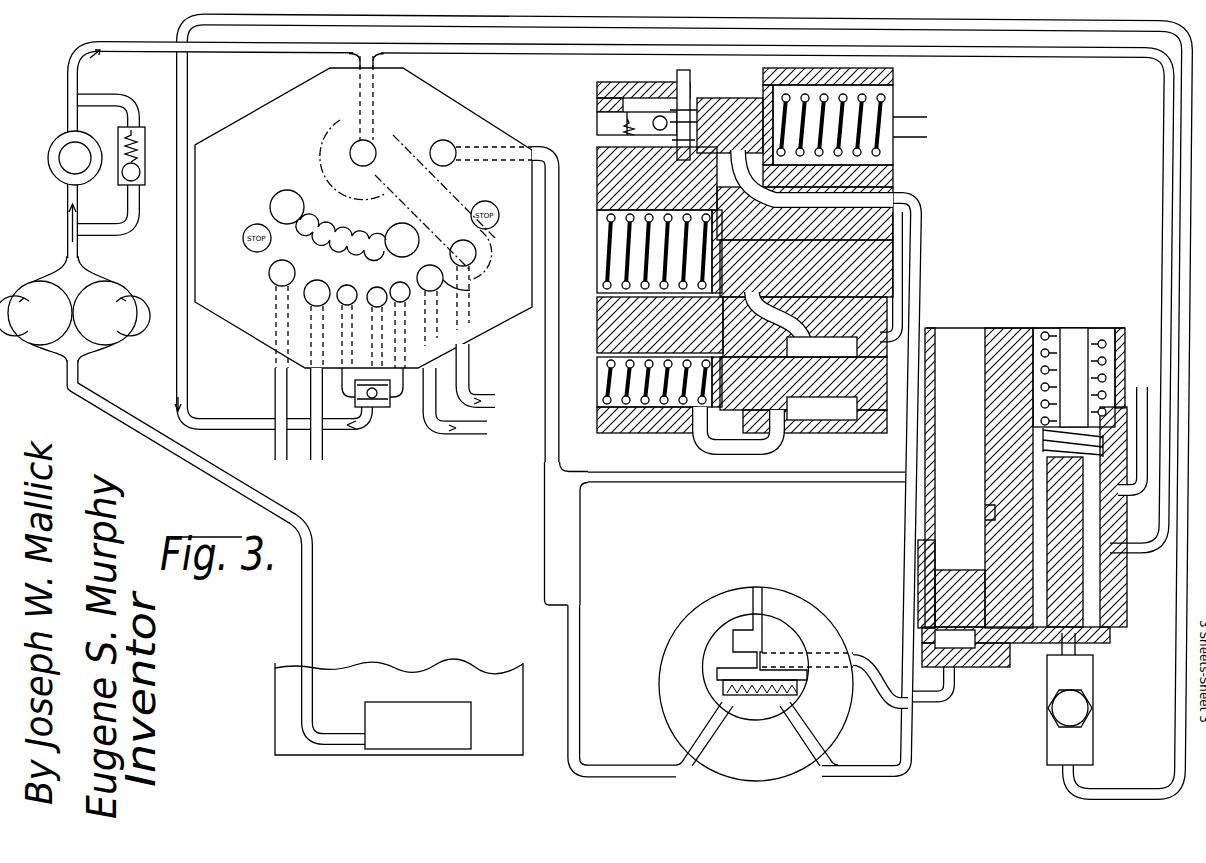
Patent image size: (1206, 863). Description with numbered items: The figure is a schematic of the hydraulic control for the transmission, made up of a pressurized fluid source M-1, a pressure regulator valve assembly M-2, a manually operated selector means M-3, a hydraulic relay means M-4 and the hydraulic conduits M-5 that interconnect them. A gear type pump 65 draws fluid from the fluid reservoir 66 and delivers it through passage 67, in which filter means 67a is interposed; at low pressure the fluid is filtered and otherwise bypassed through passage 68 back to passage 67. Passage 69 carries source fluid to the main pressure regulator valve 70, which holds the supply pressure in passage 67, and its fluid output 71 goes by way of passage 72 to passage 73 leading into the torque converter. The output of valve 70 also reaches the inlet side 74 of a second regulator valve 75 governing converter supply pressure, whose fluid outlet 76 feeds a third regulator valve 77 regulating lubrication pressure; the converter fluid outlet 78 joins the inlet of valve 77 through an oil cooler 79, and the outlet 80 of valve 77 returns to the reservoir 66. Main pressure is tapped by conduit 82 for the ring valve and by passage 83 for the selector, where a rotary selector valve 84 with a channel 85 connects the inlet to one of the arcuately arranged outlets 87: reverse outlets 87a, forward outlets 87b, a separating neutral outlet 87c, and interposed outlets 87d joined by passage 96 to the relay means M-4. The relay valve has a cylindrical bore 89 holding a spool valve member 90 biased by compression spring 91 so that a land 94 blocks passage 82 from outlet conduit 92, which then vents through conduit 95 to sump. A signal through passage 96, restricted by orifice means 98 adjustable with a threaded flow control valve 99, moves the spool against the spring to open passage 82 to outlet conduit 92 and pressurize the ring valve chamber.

The gear type pump 65 is at (124, 297).
The fluid reservoir 66 is at (277, 724).
The passage 67 is at (237, 43).
The filter means 67a is at (48, 158).
The bypass passage 68 is at (141, 100).
The passage 69 is at (676, 70).
The main pressure regulator valve 70 is at (893, 80).
The fluid output 71 is at (745, 169).
The passage 72 is at (905, 537).
The passage 73 is at (943, 703).
The inlet side 74 is at (893, 222).
The second regulator valve 75 is at (780, 345).
The fluid outlet 76 is at (820, 300).
The third regulator valve 77 is at (847, 420).
The fluid outlet 78 is at (567, 636).
The oil cooler 79 is at (544, 575).
The outlet 80 is at (742, 448).
The conduit 82 is at (1162, 303).
The passage 83 is at (400, 66).
The rotary selector valve 84 is at (394, 137).
The channel 85 is at (427, 197).
The outlets 87 is at (478, 254).
The reverse outlets 87a is at (460, 292).
The forward outlets 87b is at (289, 262).
The neutral outlet 87c is at (379, 321).
The interposed outlets 87d is at (352, 284).
The cylindrical bore 89 is at (1112, 496).
The spool valve member 90 is at (1047, 515).
The compression spring 91 is at (1044, 330).
The outlet conduit 92 is at (985, 515).
The land 94 is at (1112, 548).
The conduit 95 is at (1080, 430).
The passage 96 is at (189, 105).
The orifice means 98 is at (1102, 726).
The threaded flow control valve 99 is at (1050, 712).
The pressurized fluid source M-1 is at (122, 364).
The pressure regulator valve assembly M-2 is at (769, 461).
The manually operated selector means M-3 is at (236, 338).
The hydraulic relay means M-4 is at (1117, 632).
The hydraulic conduits M-5 is at (172, 23).